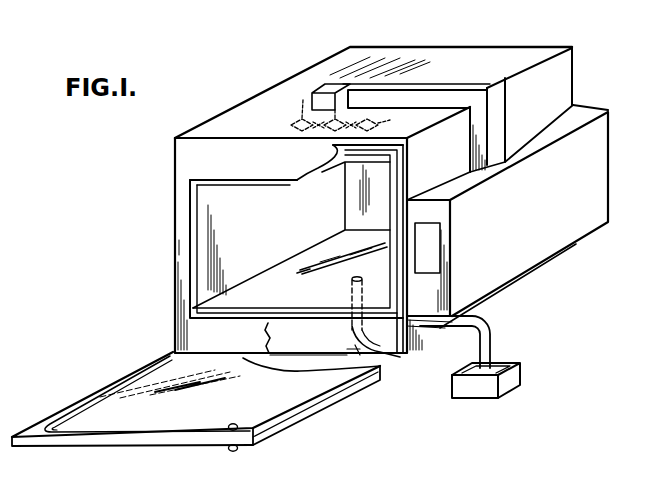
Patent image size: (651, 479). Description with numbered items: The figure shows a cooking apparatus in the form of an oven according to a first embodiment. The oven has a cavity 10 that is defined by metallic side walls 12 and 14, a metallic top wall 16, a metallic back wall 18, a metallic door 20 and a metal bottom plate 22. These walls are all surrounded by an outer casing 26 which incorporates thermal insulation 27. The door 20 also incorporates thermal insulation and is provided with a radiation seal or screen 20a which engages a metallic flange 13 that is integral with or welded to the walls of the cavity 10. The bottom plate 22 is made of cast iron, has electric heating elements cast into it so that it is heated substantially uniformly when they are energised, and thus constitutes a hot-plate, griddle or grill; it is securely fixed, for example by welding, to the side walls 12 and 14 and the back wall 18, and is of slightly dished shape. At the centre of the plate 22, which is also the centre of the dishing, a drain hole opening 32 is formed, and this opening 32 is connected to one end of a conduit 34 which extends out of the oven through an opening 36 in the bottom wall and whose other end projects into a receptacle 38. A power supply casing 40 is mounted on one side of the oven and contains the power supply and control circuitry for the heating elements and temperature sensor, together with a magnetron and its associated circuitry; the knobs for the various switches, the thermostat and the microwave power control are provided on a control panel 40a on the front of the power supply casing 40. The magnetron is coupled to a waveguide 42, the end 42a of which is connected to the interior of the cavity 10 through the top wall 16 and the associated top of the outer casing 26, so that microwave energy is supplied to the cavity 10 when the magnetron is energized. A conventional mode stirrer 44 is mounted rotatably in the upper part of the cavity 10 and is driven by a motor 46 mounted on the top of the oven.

The cavity 10 is at (228, 234).
The side wall 12 is at (200, 211).
The flange 13 is at (213, 160).
The side wall 14 is at (392, 190).
The top wall 16 is at (195, 180).
The back wall 18 is at (357, 190).
The door 20 is at (265, 405).
The radiation seal 20a is at (98, 367).
The bottom plate 22 is at (312, 275).
The outer casing 26 is at (278, 99).
The thermal insulation 27 is at (359, 351).
The drain hole opening 32 is at (356, 277).
The conduit 34 is at (488, 340).
The opening 36 is at (380, 357).
The receptacle 38 is at (515, 374).
The power supply casing 40 is at (586, 226).
The control panel 40a is at (428, 252).
The waveguide 42 is at (487, 88).
The end of the waveguide 42a is at (373, 88).
The mode stirrer 44 is at (304, 98).
The motor 46 is at (337, 88).